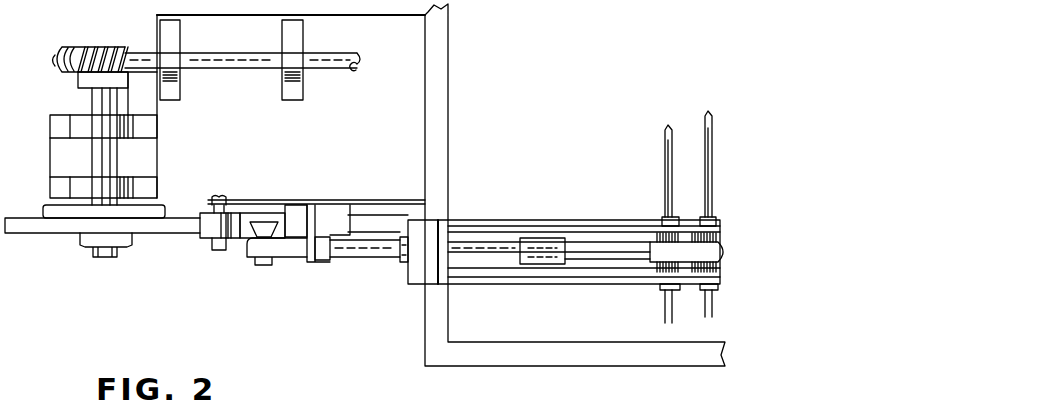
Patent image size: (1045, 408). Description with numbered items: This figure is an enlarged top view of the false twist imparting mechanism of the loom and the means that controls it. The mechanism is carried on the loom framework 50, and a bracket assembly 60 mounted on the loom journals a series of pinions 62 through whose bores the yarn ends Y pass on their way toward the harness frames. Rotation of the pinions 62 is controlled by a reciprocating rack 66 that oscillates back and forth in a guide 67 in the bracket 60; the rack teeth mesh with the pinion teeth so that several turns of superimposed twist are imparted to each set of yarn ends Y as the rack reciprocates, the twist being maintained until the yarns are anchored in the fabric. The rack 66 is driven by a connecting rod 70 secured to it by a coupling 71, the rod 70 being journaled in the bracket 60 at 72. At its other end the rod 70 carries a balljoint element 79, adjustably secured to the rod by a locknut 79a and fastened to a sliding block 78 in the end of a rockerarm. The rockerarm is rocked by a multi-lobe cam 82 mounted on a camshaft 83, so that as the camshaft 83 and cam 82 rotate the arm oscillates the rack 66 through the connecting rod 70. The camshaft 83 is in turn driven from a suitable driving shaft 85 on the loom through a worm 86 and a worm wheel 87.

The framework 50 is at (631, 357).
The bracket assembly 60 is at (532, 218).
The pinion 62 is at (660, 216).
The reciprocating rack 66 is at (610, 254).
The guide 67 is at (658, 256).
The connecting rod 70 is at (377, 253).
The coupling 71 is at (545, 259).
The journal 72 is at (404, 262).
The sliding block 78 is at (259, 230).
The balljoint element 79 is at (294, 253).
The locknut 79a is at (322, 264).
The multi-lobe cam 82 is at (18, 228).
The camshaft 83 is at (113, 163).
The driving shaft 85 is at (250, 63).
The worm 86 is at (97, 47).
The worm wheel 87 is at (63, 72).
The yarn ends Y is at (671, 151).